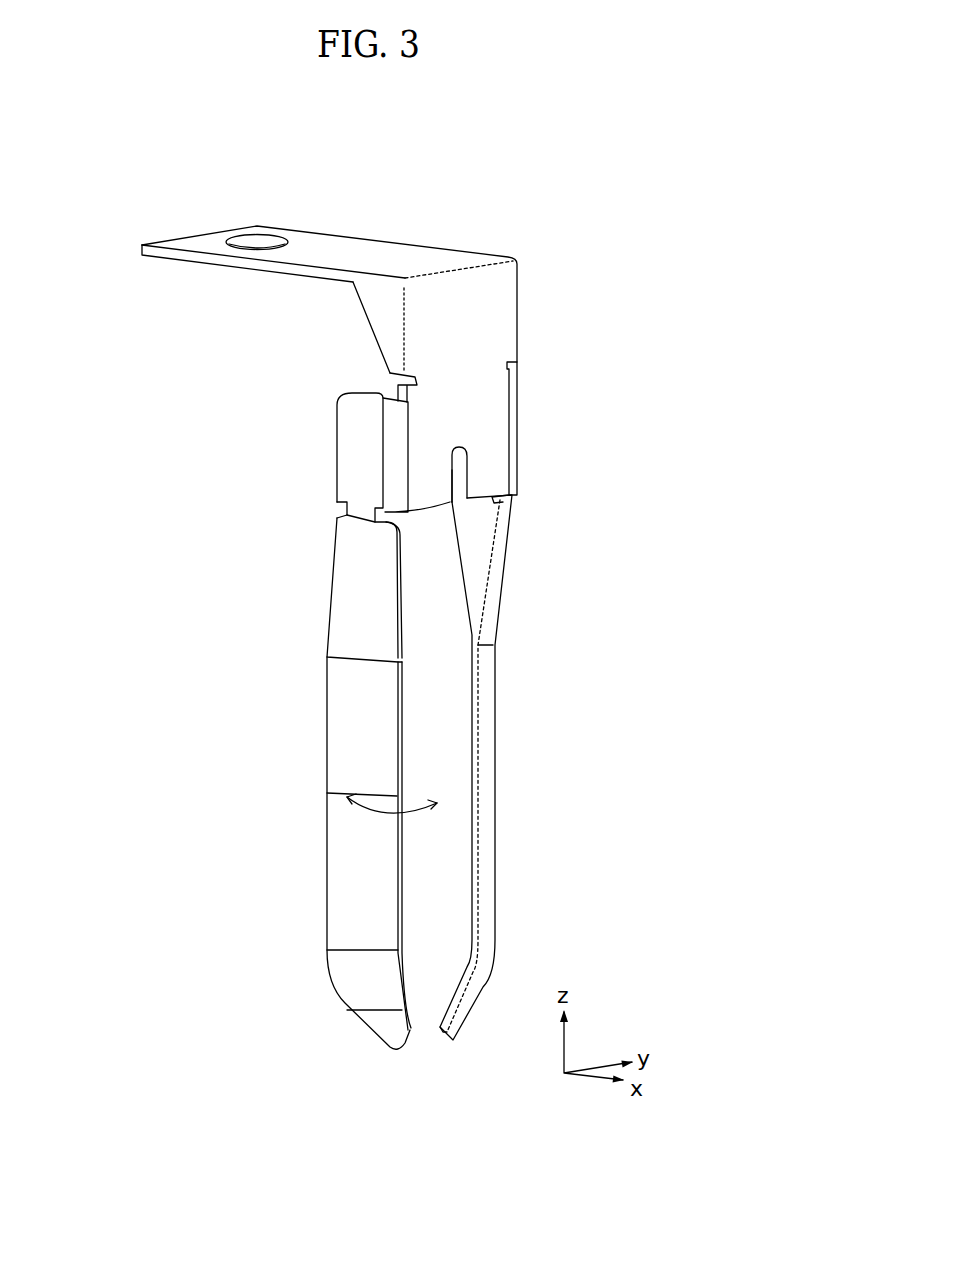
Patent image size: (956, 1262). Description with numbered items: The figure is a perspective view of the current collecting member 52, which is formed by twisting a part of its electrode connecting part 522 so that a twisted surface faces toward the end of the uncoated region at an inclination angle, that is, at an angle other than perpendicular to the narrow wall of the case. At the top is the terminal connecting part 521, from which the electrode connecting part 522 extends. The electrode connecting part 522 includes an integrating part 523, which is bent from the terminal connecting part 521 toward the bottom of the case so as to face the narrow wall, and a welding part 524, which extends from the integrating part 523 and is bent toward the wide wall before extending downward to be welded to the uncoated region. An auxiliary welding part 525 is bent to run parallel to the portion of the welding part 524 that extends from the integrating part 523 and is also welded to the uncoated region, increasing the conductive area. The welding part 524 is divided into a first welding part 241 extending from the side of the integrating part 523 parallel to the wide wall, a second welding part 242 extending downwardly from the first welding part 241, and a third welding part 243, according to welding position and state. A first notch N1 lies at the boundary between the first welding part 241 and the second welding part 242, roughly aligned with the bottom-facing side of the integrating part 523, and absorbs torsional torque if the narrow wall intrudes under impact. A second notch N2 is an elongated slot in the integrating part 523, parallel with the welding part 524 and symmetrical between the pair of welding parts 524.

The current collecting member 52 is at (527, 230).
The terminal connecting part 521 is at (333, 247).
The electrode connecting part 522 is at (625, 288).
The integrating part 523 is at (478, 402).
The welding part 524 is at (497, 683).
The auxiliary welding part 525 is at (387, 320).
The first welding part 241 is at (360, 432).
The second welding part 242 is at (358, 585).
The third welding part 243 is at (343, 870).
The first notch N1 is at (345, 507).
The second notch N2 is at (453, 473).